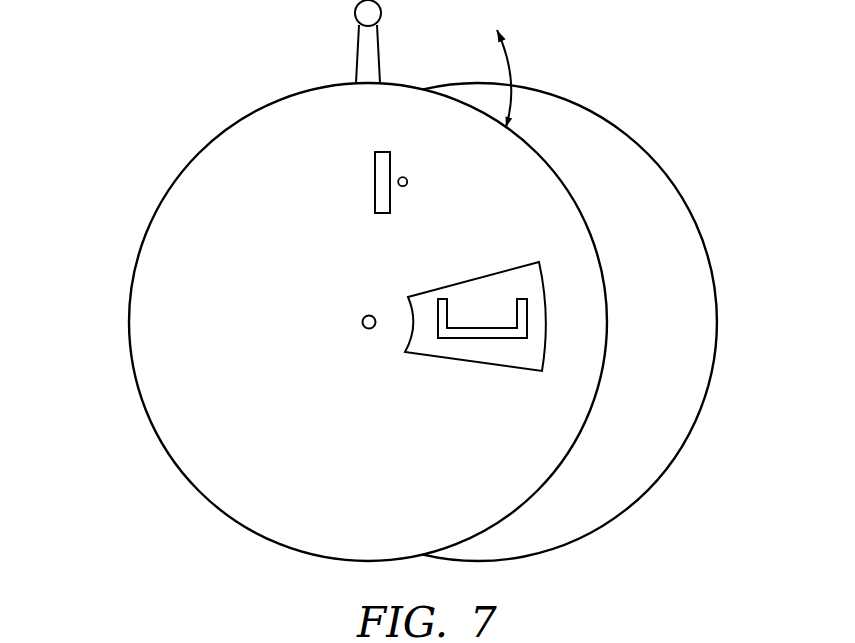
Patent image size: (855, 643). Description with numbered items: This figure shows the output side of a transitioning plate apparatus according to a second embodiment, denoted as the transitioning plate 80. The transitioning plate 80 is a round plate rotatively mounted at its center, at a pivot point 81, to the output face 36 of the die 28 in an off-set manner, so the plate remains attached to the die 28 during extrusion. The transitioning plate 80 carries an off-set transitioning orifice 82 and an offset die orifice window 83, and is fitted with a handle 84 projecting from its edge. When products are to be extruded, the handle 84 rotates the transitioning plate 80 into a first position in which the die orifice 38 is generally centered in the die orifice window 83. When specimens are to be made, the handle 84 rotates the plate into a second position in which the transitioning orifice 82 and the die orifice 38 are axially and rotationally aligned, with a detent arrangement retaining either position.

The die 28 is at (587, 306).
The output face 36 is at (675, 228).
The die orifice 38 is at (527, 320).
The transitioning plate 80 is at (317, 280).
The pivot hole 81 is at (371, 330).
The transitioning orifice 82 is at (393, 197).
The die orifice window 83 is at (502, 340).
The handle 84 is at (378, 48).